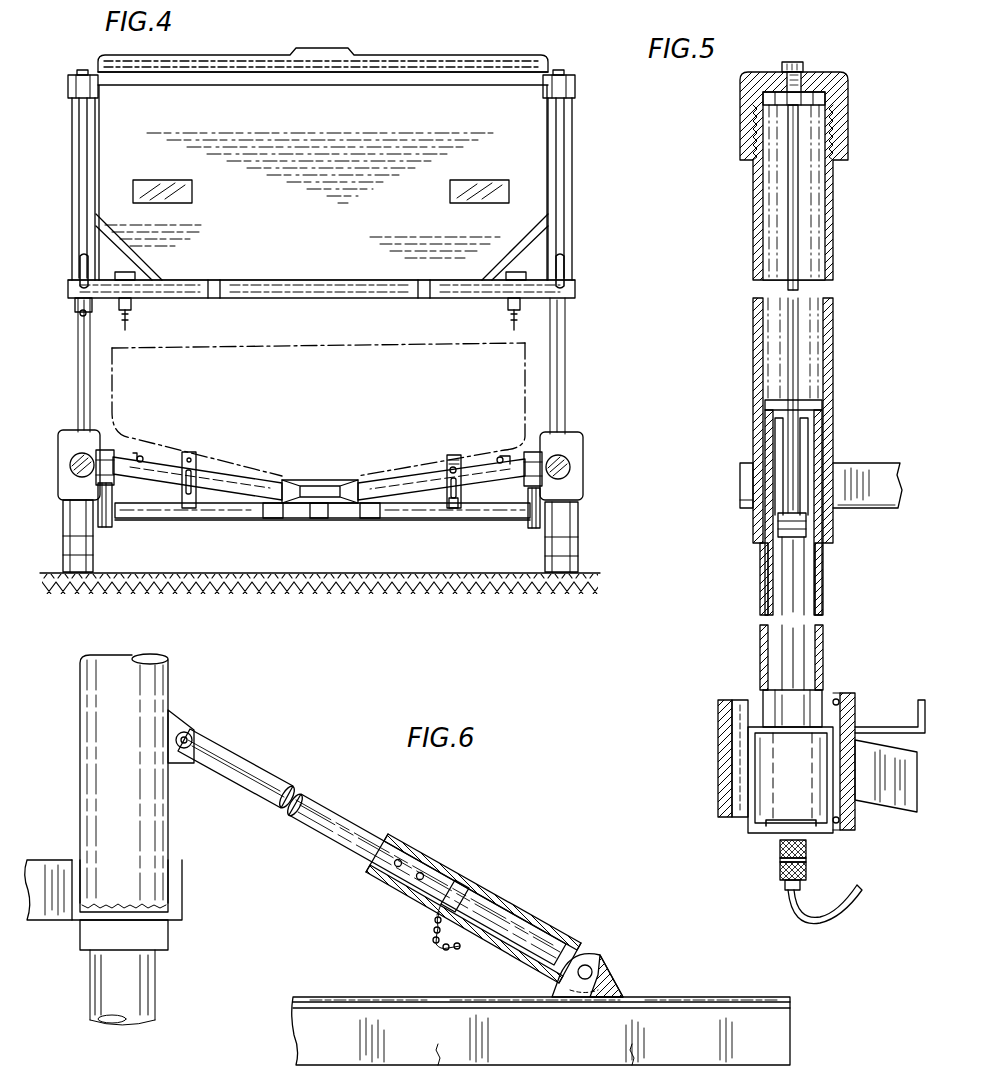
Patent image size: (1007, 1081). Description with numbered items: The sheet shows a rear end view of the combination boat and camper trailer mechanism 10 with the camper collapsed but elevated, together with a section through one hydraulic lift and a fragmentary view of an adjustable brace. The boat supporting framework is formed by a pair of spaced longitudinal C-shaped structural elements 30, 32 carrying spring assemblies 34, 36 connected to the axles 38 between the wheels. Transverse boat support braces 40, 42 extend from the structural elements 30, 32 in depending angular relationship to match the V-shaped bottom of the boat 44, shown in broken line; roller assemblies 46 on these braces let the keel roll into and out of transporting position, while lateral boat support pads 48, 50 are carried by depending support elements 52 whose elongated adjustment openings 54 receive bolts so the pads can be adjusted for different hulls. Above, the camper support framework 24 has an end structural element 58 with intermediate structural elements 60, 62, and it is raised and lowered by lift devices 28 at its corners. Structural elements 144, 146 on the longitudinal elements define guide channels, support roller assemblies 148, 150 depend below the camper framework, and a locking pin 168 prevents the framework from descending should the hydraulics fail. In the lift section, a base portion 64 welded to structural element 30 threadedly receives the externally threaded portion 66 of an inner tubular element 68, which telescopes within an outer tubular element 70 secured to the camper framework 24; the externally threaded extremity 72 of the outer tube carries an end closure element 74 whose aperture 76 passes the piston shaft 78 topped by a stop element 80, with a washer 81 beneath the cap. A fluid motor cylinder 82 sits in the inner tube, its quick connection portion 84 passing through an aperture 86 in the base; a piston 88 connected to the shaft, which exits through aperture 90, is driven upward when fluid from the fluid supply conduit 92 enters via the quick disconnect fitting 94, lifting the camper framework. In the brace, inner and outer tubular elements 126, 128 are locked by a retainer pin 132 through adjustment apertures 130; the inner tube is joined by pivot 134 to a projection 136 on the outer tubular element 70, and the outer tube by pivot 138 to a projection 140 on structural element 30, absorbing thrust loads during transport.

In FIG. 4, the combination boat and camper trailer mechanism 10 is at (63, 62).
In FIG. 4, the camper support framework 24 is at (246, 277).
In FIG. 5, the camper support framework 24 is at (728, 489).
In FIG. 4, the lift device 28 is at (72, 156).
In FIG. 5, the lift device 28 is at (840, 352).
In FIG. 4, the elongated structural element 30 is at (108, 462).
In FIG. 5, the elongated structural element 30 is at (840, 700).
In FIG. 6, the elongated structural element 30 is at (746, 1000).
In FIG. 4, the elongated structural element 32 is at (527, 460).
In FIG. 4, the spring assembly 34 is at (110, 520).
In FIG. 4, the spring assembly 36 is at (533, 530).
In FIG. 4, the axle 38 is at (390, 520).
In FIG. 4, the boat support brace 40 is at (390, 481).
In FIG. 4, the boat support brace 42 is at (247, 483).
In FIG. 4, the boat 44 is at (514, 378).
In FIG. 4, the roller assembly 46 is at (314, 480).
In FIG. 4, the boat support pad 48 is at (454, 457).
In FIG. 4, the boat support pad 50 is at (192, 455).
In FIG. 4, the depending support element 52 is at (450, 468).
In FIG. 4, the elongated adjustment opening 54 is at (454, 510).
In FIG. 4, the end structural element 58 is at (302, 283).
In FIG. 5, the end structural element 58 is at (868, 466).
In FIG. 4, the intermediate structural element 60 is at (215, 299).
In FIG. 4, the intermediate structural element 62 is at (422, 299).
In FIG. 5, the base portion 64 is at (752, 822).
In FIG. 5, the externally threaded portion 66 is at (760, 755).
In FIG. 5, the inner tubular element 68 is at (758, 660).
In FIG. 5, the outer tubular element 70 is at (757, 358).
In FIG. 6, the outer tubular element 70 is at (158, 688).
In FIG. 5, the externally threaded extremity 72 is at (752, 134).
In FIG. 5, the end closure element 74 is at (745, 84).
In FIG. 5, the aperture 76 is at (802, 74).
In FIG. 5, the piston shaft 78 is at (797, 238).
In FIG. 5, the stop element 80 is at (790, 62).
In FIG. 5, the washer 81 is at (826, 98).
In FIG. 5, the fluid motor cylinder 82 is at (776, 580).
In FIG. 5, the quick connection portion 84 is at (782, 870).
In FIG. 5, the aperture 86 is at (806, 848).
In FIG. 5, the piston 88 is at (796, 550).
In FIG. 5, the aperture 90 is at (790, 410).
In FIG. 5, the fluid supply conduit 92 is at (830, 917).
In FIG. 5, the quick disconnect fitting 94 is at (788, 886).
In FIG. 6, the inner tubular element 126 is at (320, 815).
In FIG. 6, the outer tubular element 128 is at (525, 912).
In FIG. 6, the adjustment aperture 130 is at (423, 873).
In FIG. 6, the retainer pin 132 is at (466, 882).
In FIG. 6, the pivot 134 is at (198, 740).
In FIG. 6, the projection 136 is at (180, 716).
In FIG. 6, the pivot 138 is at (590, 956).
In FIG. 6, the projection 140 is at (640, 966).
In FIG. 4, the structural element 144 is at (143, 456).
In FIG. 4, the structural element 146 is at (497, 457).
In FIG. 4, the support roller assembly 148 is at (130, 312).
In FIG. 4, the support roller assembly 150 is at (507, 308).
In FIG. 4, the locking pin 168 is at (78, 316).